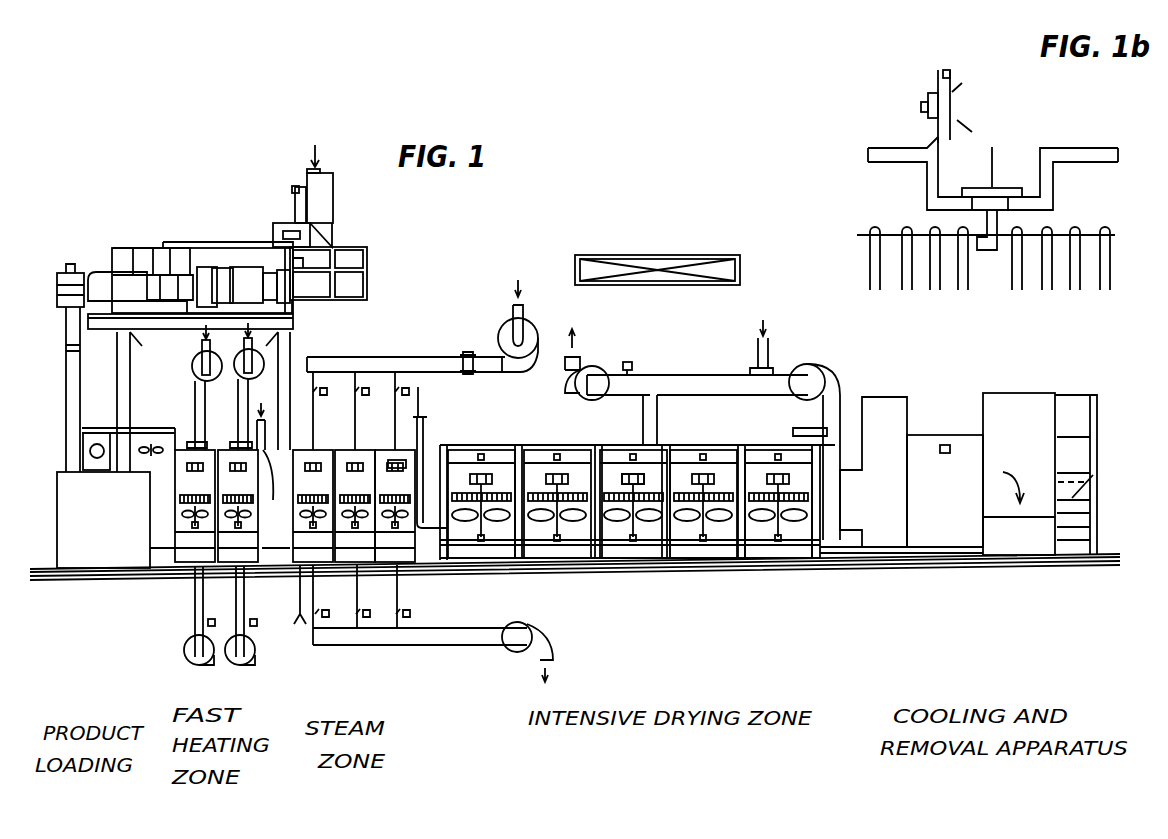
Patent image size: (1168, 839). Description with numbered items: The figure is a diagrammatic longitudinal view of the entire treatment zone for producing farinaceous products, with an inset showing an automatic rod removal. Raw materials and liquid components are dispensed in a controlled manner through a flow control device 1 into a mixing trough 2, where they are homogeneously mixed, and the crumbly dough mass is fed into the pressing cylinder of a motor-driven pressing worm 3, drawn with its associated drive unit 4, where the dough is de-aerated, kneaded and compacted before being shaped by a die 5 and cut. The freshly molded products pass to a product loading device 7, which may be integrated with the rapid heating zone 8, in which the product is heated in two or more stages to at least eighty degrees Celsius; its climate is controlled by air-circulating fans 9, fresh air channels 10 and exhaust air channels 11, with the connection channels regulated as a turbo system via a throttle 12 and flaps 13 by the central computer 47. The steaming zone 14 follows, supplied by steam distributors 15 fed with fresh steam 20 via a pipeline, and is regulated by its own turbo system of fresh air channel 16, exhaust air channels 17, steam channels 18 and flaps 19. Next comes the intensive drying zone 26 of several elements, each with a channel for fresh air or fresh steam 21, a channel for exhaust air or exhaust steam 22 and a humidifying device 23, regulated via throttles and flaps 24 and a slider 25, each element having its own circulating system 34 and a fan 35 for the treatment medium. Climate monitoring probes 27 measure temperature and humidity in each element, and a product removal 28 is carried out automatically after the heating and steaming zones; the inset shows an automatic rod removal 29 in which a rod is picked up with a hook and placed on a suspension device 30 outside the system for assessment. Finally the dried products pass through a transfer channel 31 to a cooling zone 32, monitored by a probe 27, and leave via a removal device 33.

In FIG. 1, the flow control device 1 is at (330, 201).
In FIG. 1, the mixing trough 2 is at (216, 256).
In FIG. 1, the pressing worm 3 is at (112, 284).
In FIG. 1, the extruder 4 is at (246, 282).
In FIG. 1, the die 5 is at (62, 306).
In FIG. 1, the product loading device 7 is at (110, 548).
In FIG. 1, the rapid heating zone 8 is at (185, 547).
In FIG. 1, the air-circulating fans 9 is at (160, 448).
In FIG. 1, the fresh air channels 10 is at (193, 366).
In FIG. 1, the exhaust air channels 11 is at (198, 666).
In FIG. 1, the throttle 12 is at (232, 446).
In FIG. 1, the flaps 13 is at (258, 628).
In FIG. 1, the steaming zone 14 is at (328, 535).
In FIG. 1, the steam distributors 15 is at (405, 535).
In FIG. 1, the fresh air channel 16 is at (433, 352).
In FIG. 1, the exhaust air channels 17 is at (446, 637).
In FIG. 1, the steam channels 18 is at (472, 352).
In FIG. 1, the flaps 19 is at (365, 392).
In FIG. 1, the fresh steam 20 is at (300, 612).
In FIG. 1, the channel for fresh air or fresh steam 21 is at (808, 542).
In FIG. 1, the channel for exhaust air or exhaust steam 22 is at (758, 446).
In FIG. 1, the humidifying device 23 is at (841, 460).
In FIG. 1, the throttles and flaps 24 is at (748, 361).
In FIG. 1, the slider 25 is at (644, 446).
In FIG. 1, the intensive drying zone 26 is at (614, 527).
In FIG. 1, the climate monitoring probes 27 is at (408, 462).
In FIG. 1, the product removal 28 is at (264, 462).
In FIG. 1b, the automatic rod removal 29 is at (1004, 188).
In FIG. 1b, the suspension device 30 is at (957, 92).
In FIG. 1, the transfer channel 31 is at (865, 522).
In FIG. 1, the cooling zone 32 is at (940, 525).
In FIG. 1, the removal device 33 is at (1027, 545).
In FIG. 1b, the circulating system 34 is at (921, 105).
In FIG. 1, the fan 35 is at (500, 514).
In FIG. 1, the central computer 47 is at (742, 272).